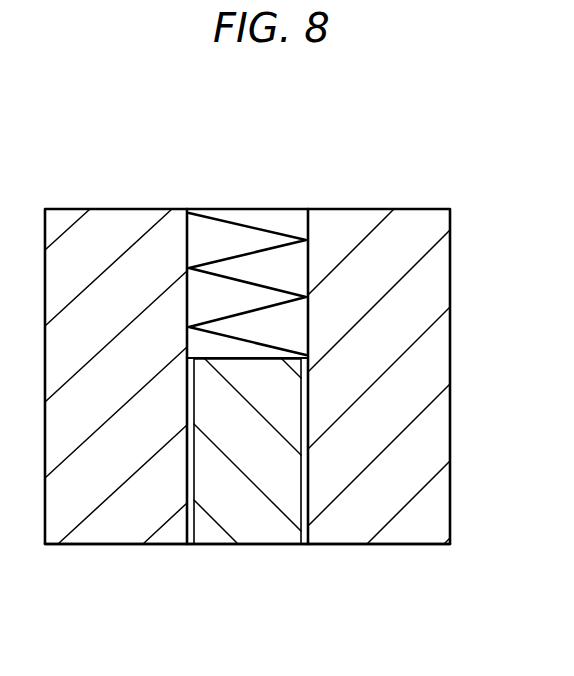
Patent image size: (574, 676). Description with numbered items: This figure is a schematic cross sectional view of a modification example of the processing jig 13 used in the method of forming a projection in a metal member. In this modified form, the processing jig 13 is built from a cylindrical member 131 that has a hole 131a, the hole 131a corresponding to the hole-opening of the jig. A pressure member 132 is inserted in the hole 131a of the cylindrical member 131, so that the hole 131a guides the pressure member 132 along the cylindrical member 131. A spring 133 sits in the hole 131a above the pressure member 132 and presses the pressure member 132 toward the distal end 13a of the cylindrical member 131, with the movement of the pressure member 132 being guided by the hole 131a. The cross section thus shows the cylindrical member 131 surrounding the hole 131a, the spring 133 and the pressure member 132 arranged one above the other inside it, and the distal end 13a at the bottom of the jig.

The processing jig 13 is at (54, 170).
The distal end 13a is at (387, 544).
The cylindrical member 131 is at (440, 350).
The hole 131a is at (310, 285).
The pressure member 132 is at (272, 534).
The spring 133 is at (268, 228).